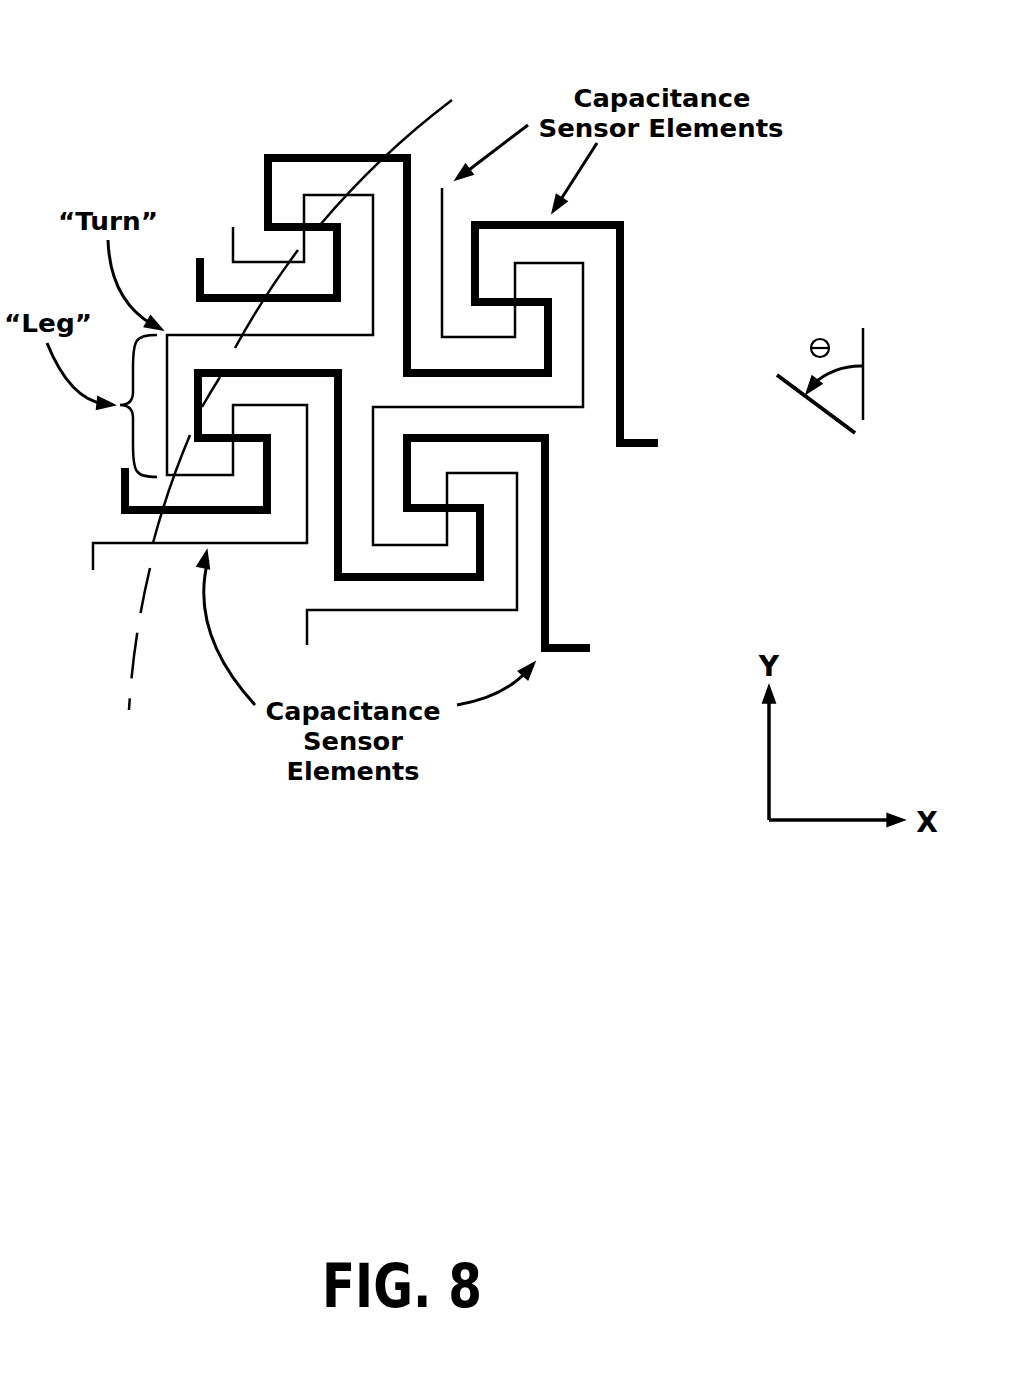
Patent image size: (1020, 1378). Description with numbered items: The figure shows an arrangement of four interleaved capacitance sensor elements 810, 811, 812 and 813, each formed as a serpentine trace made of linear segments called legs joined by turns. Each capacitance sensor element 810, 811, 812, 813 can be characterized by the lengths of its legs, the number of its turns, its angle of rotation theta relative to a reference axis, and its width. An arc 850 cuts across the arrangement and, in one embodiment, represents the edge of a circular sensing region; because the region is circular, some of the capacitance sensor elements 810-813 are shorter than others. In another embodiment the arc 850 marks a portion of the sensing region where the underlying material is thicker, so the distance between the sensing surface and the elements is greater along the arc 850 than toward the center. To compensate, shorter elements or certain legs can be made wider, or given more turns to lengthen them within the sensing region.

The capacitance sensor element 810 is at (628, 313).
The capacitance sensor element 811 is at (567, 412).
The capacitance sensor element 812 is at (228, 225).
The capacitance sensor element 813 is at (560, 583).
The arc 850 is at (413, 127).